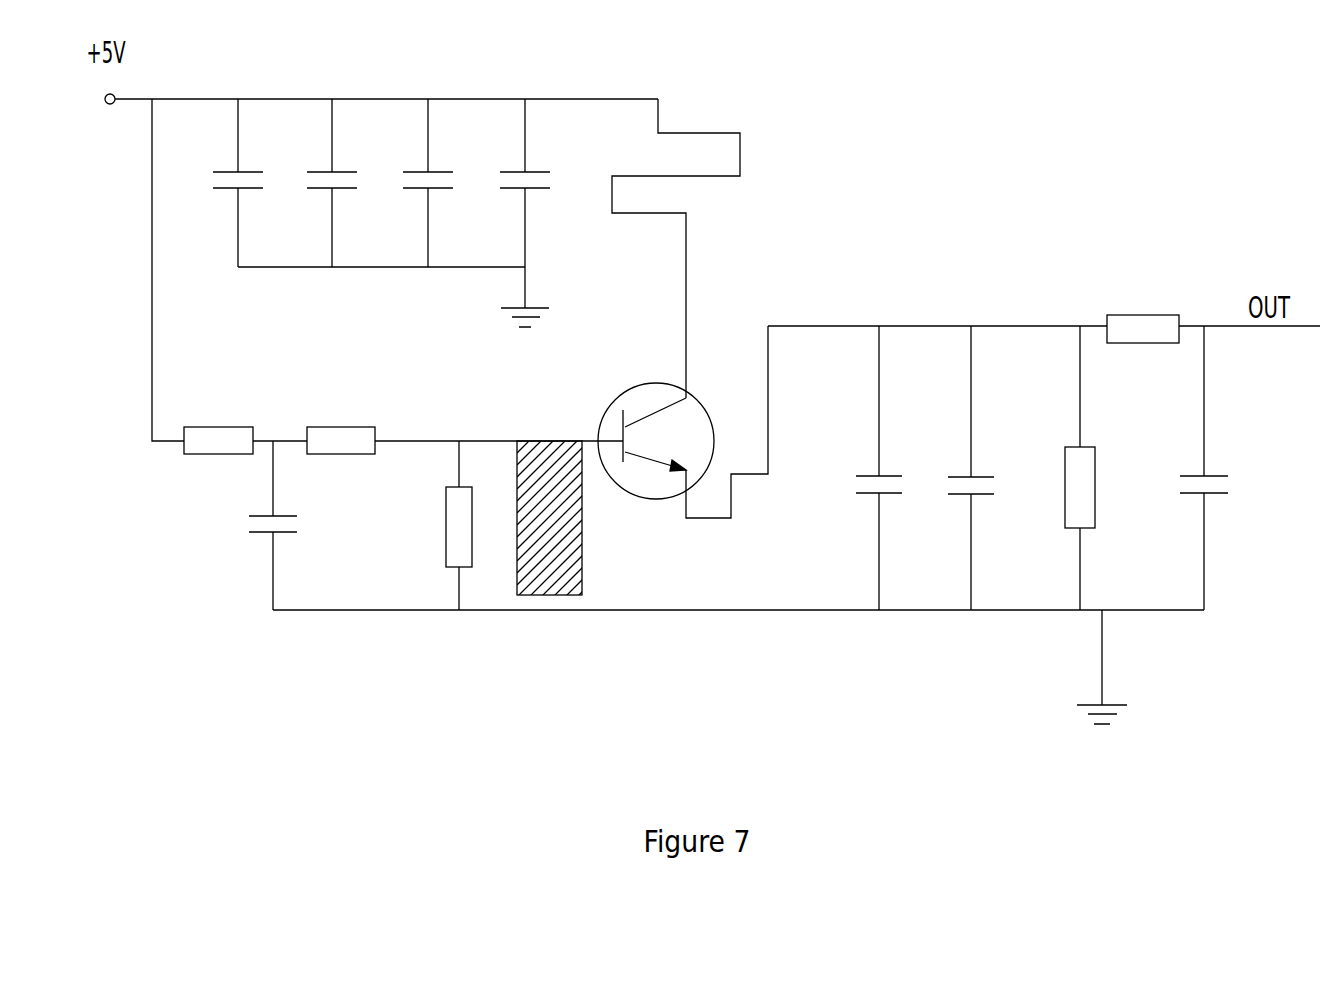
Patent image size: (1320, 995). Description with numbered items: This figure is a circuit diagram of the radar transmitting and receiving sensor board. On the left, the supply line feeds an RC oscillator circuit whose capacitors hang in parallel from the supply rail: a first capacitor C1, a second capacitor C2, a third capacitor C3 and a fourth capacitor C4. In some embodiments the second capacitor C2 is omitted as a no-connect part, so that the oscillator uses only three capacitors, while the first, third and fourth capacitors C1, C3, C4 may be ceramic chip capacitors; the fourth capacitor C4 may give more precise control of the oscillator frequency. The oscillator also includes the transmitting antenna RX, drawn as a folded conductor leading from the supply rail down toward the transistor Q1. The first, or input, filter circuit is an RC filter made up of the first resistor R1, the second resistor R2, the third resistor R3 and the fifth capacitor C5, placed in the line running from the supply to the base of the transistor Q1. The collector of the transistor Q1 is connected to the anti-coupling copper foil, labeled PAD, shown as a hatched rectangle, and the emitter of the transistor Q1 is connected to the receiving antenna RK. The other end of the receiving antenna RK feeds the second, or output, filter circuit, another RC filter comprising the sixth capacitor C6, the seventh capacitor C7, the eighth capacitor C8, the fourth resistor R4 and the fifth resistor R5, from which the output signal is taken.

The first capacitor C1 is at (217, 183).
The second capacitor C2 is at (319, 183).
The third capacitor C3 is at (421, 183).
The fourth capacitor C4 is at (536, 183).
The fifth capacitor C5 is at (260, 525).
The sixth capacitor C6 is at (863, 468).
The seventh capacitor C7 is at (956, 468).
The eighth capacitor C8 is at (1190, 468).
The first resistor R1 is at (218, 416).
The second resistor R2 is at (341, 415).
The third resistor R3 is at (439, 525).
The fourth resistor R4 is at (1143, 303).
The fifth resistor R5 is at (1060, 468).
The transmitting antenna RX is at (697, 248).
The receiving antenna RK is at (727, 422).
The transistor Q1 is at (644, 429).
The anti-coupling copper foil PAD is at (625, 519).